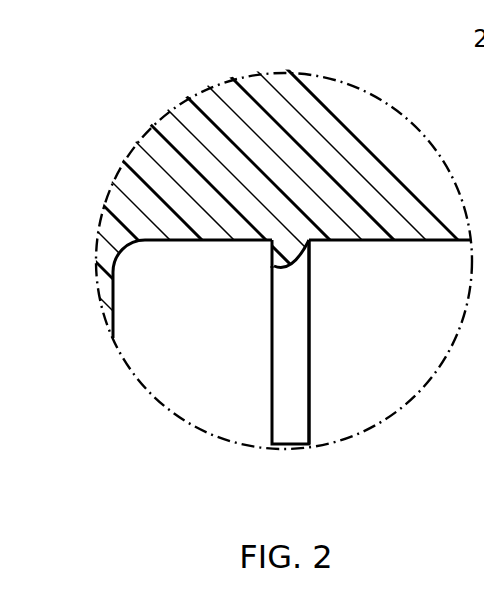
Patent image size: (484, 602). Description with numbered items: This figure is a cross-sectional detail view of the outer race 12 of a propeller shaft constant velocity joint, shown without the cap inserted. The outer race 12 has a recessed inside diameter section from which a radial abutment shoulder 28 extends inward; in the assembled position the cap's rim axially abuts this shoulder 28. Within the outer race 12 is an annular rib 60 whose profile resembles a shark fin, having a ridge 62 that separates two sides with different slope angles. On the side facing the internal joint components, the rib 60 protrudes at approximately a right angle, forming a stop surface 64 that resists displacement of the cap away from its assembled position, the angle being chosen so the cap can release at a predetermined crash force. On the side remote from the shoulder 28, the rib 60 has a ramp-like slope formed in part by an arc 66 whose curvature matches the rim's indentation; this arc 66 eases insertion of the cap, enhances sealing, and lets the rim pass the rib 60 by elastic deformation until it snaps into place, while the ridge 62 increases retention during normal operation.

The outer race 12 is at (348, 155).
The radial abutment shoulder 28 is at (110, 235).
The annular rib 60 is at (289, 258).
The ridge 62 is at (272, 265).
The stop surface 64 is at (271, 252).
The arc 66 is at (310, 262).